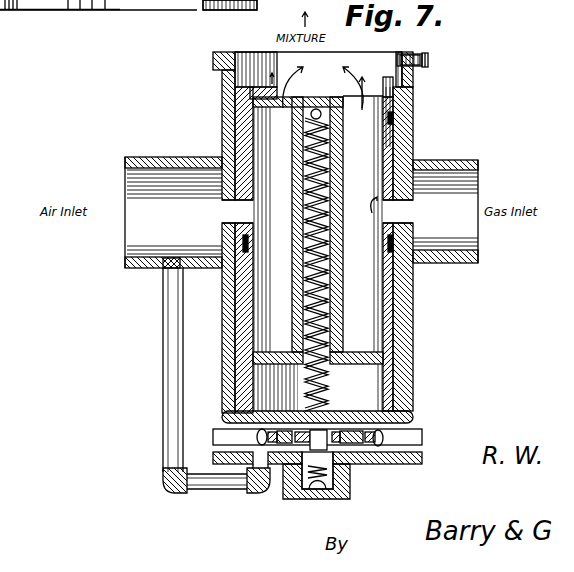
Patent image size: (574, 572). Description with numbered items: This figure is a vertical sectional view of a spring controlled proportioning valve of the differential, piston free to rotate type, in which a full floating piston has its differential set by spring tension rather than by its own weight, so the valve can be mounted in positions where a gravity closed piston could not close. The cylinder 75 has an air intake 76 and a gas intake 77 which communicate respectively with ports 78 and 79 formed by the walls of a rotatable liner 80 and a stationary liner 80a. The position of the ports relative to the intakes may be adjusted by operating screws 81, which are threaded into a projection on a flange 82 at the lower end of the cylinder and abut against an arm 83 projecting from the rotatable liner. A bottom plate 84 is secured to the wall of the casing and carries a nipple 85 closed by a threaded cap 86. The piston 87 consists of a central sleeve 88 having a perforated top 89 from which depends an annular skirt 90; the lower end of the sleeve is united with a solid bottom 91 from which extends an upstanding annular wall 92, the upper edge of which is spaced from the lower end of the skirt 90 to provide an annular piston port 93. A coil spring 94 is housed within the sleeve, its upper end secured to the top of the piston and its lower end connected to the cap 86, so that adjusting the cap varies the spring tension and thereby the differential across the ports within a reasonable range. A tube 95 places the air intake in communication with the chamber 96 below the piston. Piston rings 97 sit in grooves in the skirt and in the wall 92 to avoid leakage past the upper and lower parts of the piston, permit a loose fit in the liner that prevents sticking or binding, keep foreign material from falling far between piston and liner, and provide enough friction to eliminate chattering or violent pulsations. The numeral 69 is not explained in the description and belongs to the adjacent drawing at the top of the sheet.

The element of preceding figure 69 is at (155, 1).
The cylinder 75 is at (413, 350).
The air intake 76 is at (162, 157).
The gas intake 77 is at (458, 164).
The port 78 is at (250, 211).
The port 79 is at (405, 228).
The rotatable liner 80 is at (400, 318).
The stationary liner 80a is at (400, 88).
The screws 81 is at (257, 446).
The flange 82 is at (412, 435).
The arm 83 is at (317, 438).
The bottom plate 84 is at (420, 458).
The nipple 85 is at (347, 473).
The threaded cap 86 is at (291, 490).
The piston 87 is at (398, 140).
The central sleeve 88 is at (347, 130).
The perforated top 89 is at (290, 108).
The annular skirt 90 is at (243, 128).
The solid bottom 91 is at (270, 352).
The upstanding annular wall 92 is at (405, 292).
The annular piston port 93 is at (288, 226).
The coil spring 94 is at (333, 110).
The tube 95 is at (172, 478).
The chamber 96 is at (262, 385).
The piston rings 97 is at (245, 122).